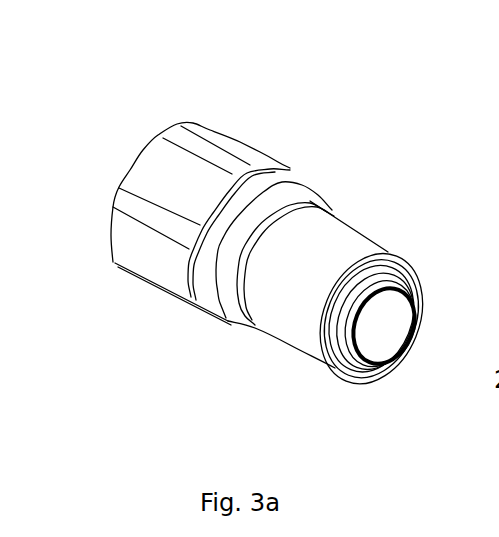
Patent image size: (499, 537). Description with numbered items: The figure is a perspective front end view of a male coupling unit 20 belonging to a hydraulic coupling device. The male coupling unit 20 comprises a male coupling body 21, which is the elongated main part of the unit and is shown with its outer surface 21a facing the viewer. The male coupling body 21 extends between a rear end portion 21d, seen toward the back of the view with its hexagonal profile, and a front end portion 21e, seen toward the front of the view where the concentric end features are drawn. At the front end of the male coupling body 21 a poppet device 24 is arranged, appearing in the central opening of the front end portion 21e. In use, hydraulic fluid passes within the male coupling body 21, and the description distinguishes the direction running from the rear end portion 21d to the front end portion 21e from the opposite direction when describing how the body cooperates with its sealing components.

The male coupling unit 20 is at (186, 102).
The male coupling body 21 is at (333, 233).
The outer surface 21a is at (260, 323).
The rear end portion 21d is at (118, 262).
The front end portion 21e is at (385, 252).
The poppet device 24 is at (405, 338).